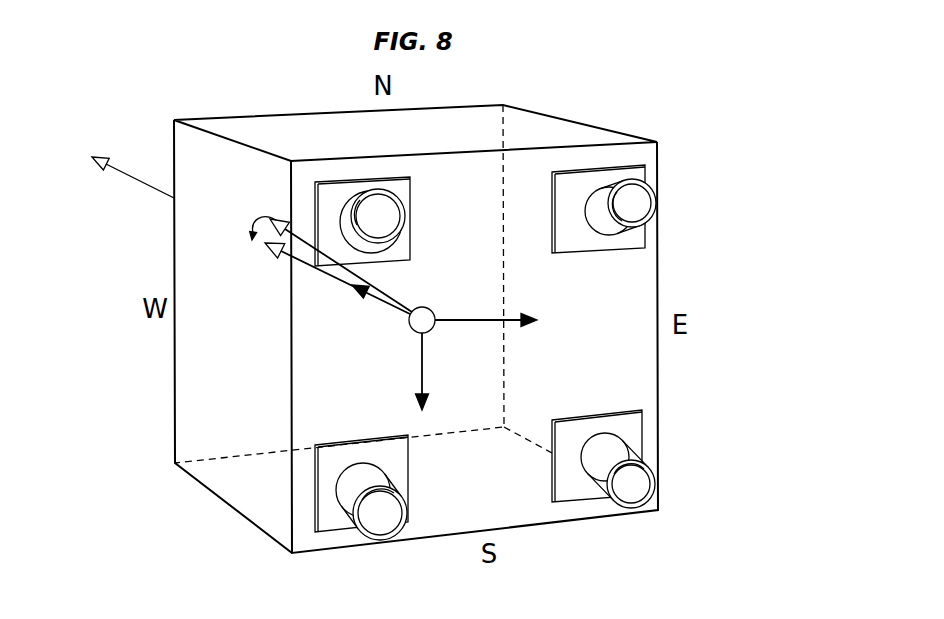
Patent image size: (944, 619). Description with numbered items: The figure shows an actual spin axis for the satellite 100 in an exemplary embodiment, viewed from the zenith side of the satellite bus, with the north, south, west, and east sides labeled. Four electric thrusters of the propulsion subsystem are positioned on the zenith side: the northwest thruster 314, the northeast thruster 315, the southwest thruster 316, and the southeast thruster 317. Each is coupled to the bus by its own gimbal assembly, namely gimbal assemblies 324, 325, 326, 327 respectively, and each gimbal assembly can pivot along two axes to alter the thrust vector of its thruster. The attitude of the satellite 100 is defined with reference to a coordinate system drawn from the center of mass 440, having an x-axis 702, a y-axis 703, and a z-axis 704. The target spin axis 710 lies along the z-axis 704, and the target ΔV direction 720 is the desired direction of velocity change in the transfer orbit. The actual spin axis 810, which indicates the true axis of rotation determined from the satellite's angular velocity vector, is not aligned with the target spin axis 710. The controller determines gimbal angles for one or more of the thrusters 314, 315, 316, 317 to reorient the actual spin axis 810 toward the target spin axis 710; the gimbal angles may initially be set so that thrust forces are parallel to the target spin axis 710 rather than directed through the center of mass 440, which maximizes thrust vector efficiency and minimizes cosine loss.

The satellite 100 is at (638, 100).
The target spin axis 710 is at (125, 175).
The target ΔV direction 720 is at (268, 250).
The actual spin axis 810 is at (281, 218).
The z-axis 704 is at (375, 298).
The x-axis 702 is at (510, 322).
The y-axis 703 is at (418, 378).
The center of mass 440 is at (430, 332).
The northwest thruster 314 is at (392, 208).
The northeast thruster 315 is at (647, 183).
The southwest thruster 316 is at (388, 485).
The southeast thruster 317 is at (630, 452).
The gimbal assembly 324 is at (400, 252).
The gimbal assembly 325 is at (638, 240).
The gimbal assembly 326 is at (328, 470).
The gimbal assembly 327 is at (630, 428).